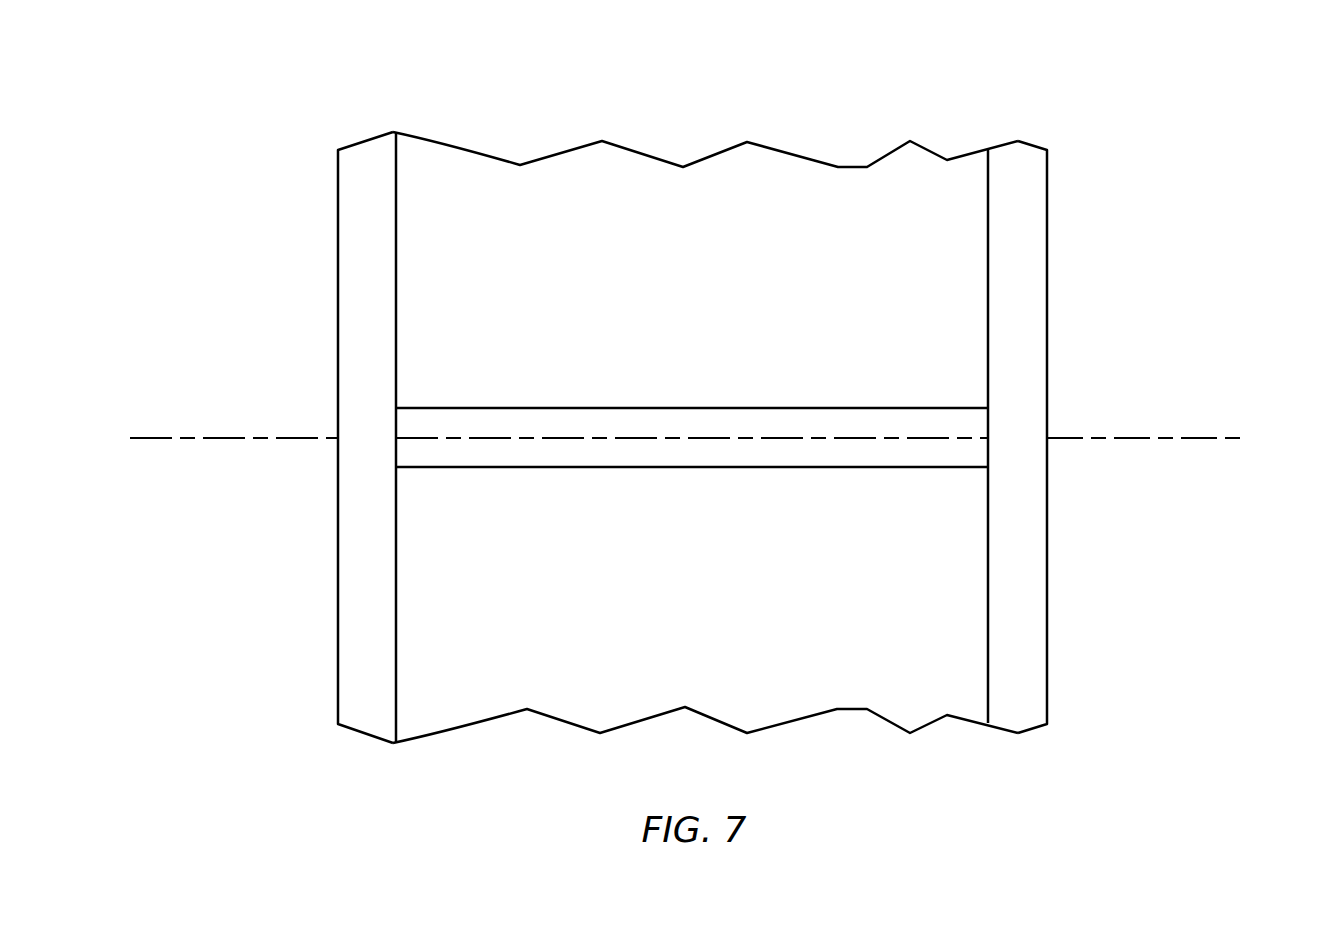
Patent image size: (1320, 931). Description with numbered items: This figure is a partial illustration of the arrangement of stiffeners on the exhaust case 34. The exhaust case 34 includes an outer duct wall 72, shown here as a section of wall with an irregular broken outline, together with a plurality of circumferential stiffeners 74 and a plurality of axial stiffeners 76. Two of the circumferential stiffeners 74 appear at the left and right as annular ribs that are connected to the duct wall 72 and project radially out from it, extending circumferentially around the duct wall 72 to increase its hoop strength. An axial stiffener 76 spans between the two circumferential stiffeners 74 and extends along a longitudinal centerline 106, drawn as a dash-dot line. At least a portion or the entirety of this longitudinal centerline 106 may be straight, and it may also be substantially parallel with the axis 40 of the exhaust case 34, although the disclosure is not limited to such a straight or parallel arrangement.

The exhaust case 34 is at (687, 384).
The outer duct wall 72 is at (727, 146).
The circumferential stiffener 74 is at (321, 239).
The axial stiffener 76 is at (646, 406).
The axis 40 is at (1238, 440).
The longitudinal centerline 106 is at (497, 440).